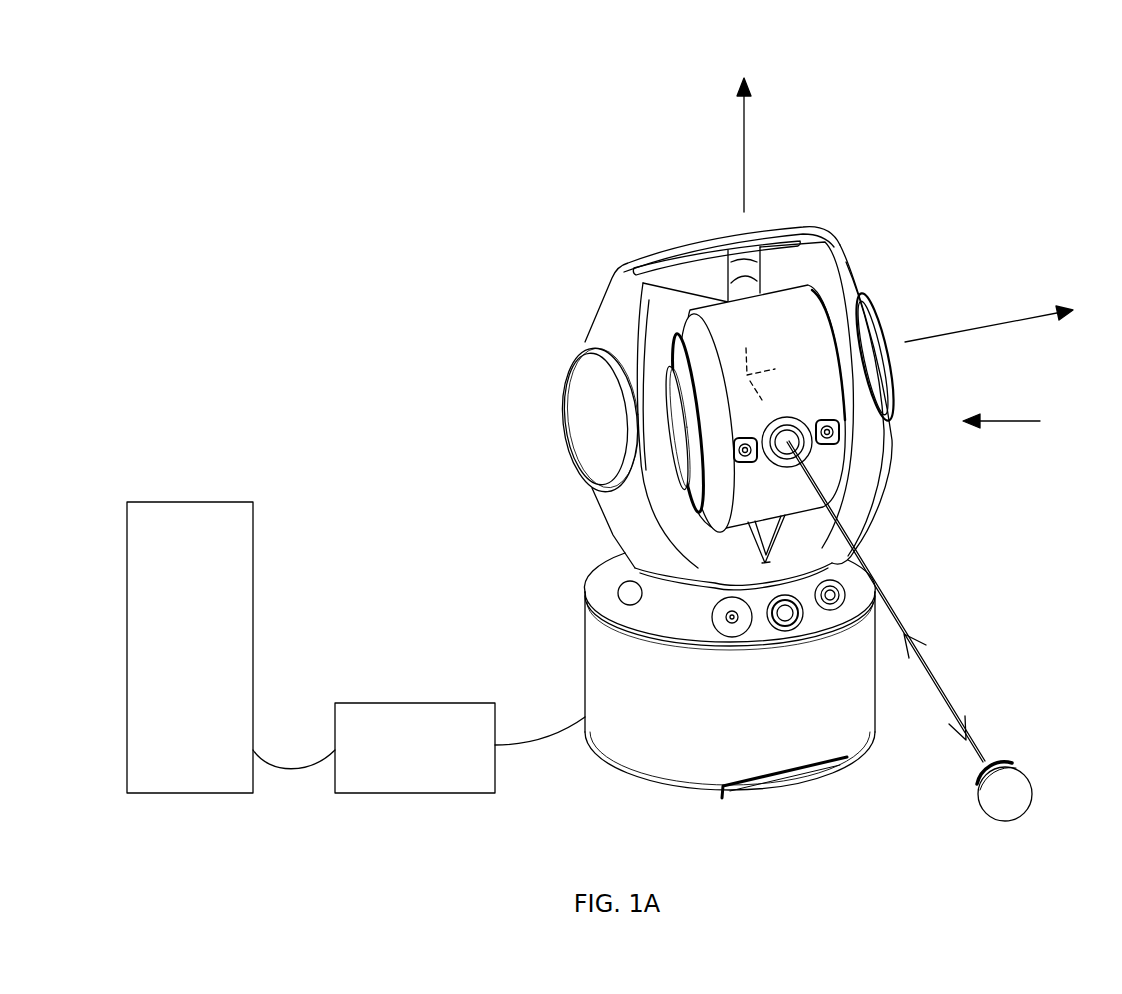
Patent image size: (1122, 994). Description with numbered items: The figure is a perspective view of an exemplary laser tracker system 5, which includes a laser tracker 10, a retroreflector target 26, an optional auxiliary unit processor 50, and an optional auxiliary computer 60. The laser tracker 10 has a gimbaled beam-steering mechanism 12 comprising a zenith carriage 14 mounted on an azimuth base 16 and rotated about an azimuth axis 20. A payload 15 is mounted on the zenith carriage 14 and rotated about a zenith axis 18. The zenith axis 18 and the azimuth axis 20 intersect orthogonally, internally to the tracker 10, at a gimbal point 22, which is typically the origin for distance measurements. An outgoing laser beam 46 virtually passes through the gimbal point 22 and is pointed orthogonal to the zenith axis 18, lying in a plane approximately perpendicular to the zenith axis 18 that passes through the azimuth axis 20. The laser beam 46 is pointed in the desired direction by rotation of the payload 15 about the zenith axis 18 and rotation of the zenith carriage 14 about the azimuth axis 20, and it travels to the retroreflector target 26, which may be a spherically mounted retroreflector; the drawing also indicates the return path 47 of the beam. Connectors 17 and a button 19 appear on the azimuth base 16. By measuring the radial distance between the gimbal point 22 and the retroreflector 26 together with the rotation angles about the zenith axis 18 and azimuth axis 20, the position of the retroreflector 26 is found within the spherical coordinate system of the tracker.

The laser tracker system 5 is at (308, 133).
The laser tracker 10 is at (521, 243).
The gimbaled beam-steering mechanism 12 is at (1020, 422).
The zenith carriage 14 is at (596, 322).
The payload 15 is at (858, 422).
The azimuth base 16 is at (586, 633).
The connectors 17 is at (822, 618).
The zenith axis 18 is at (1007, 323).
The button 19 is at (618, 596).
The azimuth axis 20 is at (747, 127).
The gimbal point 22 is at (748, 375).
The retroreflector target 26 is at (1010, 765).
The laser beam 46 is at (970, 745).
The returning laser beam 47 is at (903, 625).
The auxiliary unit processor 50 is at (418, 703).
The auxiliary computer 60 is at (232, 502).